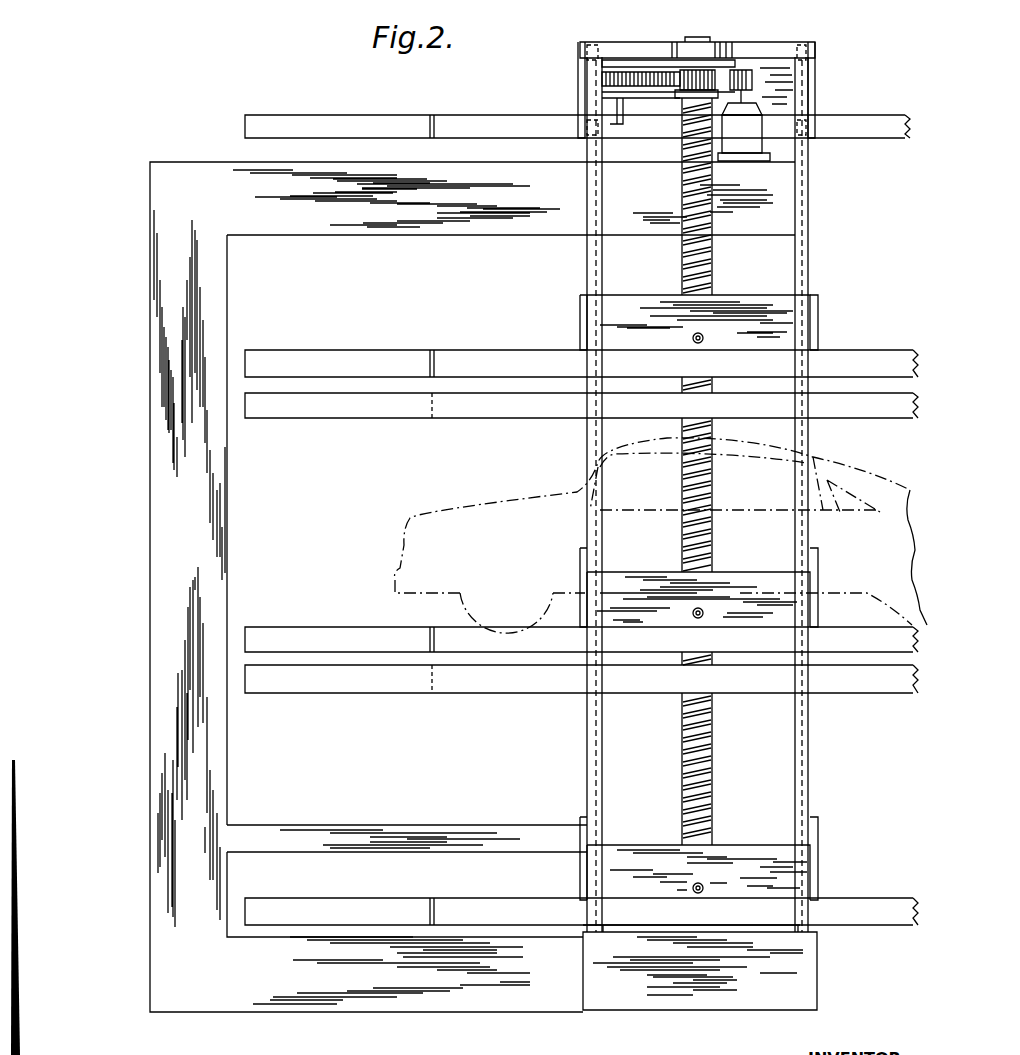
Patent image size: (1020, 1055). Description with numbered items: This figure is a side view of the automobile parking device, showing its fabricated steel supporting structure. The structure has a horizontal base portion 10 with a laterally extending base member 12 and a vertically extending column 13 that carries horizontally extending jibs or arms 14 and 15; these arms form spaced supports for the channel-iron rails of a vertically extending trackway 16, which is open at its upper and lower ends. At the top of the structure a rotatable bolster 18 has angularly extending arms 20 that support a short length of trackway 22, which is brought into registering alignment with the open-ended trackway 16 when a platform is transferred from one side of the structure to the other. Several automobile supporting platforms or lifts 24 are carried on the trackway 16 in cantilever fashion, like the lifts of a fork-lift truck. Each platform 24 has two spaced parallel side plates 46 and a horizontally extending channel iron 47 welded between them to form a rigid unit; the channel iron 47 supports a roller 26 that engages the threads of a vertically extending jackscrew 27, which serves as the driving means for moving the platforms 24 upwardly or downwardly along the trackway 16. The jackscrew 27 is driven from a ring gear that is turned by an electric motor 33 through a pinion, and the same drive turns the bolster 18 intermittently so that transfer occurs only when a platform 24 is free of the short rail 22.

The horizontal base portion 10 is at (490, 1012).
The laterally extending base member 12 is at (735, 1000).
The vertically extending column 13 is at (205, 537).
The horizontally extending jib or arm 14 is at (445, 232).
The horizontally extending jib or arm 15 is at (398, 834).
The vertically extending trackway 16 is at (596, 240).
The rotatable bolster 18 is at (700, 55).
The angularly extending arm 20 is at (628, 46).
The short length of trackway 22 is at (572, 68).
The automobile supporting platform or lift 24 is at (850, 118).
The jackscrew engaging roller 26 is at (690, 338).
The jackscrew 27 is at (712, 268).
The electric motor 33 is at (744, 125).
The side plate 46 is at (580, 90).
The horizontally extending channel iron 47 is at (610, 315).